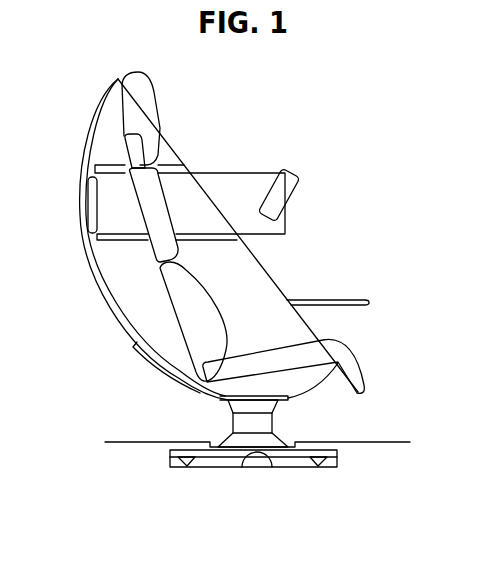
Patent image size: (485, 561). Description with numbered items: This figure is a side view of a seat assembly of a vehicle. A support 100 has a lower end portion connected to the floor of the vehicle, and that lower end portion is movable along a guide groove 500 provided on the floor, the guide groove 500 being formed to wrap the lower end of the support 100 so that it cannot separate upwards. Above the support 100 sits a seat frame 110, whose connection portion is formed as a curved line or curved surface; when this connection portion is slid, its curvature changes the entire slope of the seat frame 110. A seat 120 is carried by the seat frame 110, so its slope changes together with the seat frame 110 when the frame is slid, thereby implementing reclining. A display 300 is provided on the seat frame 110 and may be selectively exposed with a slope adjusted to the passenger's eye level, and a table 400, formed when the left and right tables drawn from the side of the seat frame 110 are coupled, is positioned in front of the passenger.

The support 100 is at (240, 420).
The seat frame 110 is at (127, 275).
The seat 120 is at (268, 357).
The display 300 is at (288, 178).
The table 400 is at (355, 299).
The guide groove 500 is at (272, 467).